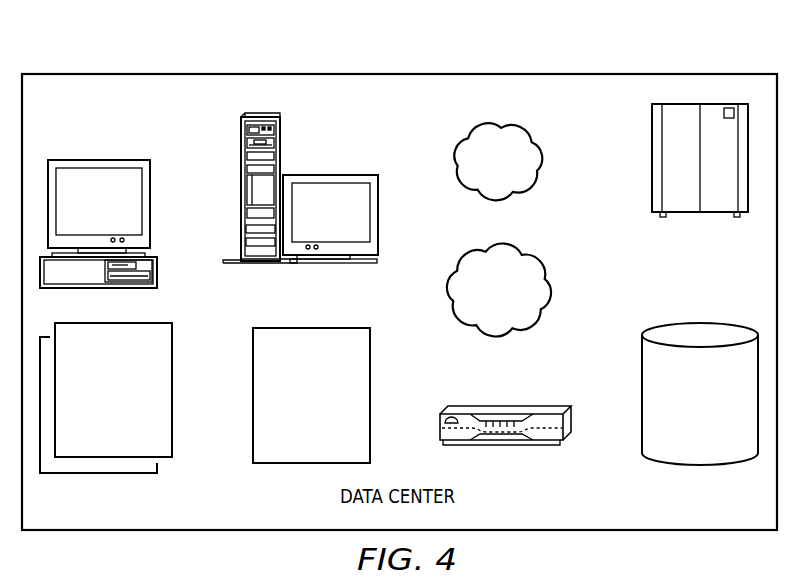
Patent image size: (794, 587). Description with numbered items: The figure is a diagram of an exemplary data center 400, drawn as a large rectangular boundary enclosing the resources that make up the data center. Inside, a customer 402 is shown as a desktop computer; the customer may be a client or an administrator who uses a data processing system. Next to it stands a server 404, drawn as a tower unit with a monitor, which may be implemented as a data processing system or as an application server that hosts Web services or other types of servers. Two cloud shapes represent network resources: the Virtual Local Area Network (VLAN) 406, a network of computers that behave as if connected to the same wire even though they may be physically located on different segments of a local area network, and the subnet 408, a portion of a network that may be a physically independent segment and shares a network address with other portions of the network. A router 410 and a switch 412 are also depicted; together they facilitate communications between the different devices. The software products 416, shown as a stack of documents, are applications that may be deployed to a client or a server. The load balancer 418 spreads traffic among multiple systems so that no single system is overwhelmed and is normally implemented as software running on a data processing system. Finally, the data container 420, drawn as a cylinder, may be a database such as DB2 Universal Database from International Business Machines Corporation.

The data center 400 is at (541, 73).
The customer 402 is at (98, 160).
The server 404 is at (333, 172).
The Virtual Local Area Network (VLAN) 406 is at (547, 150).
The subnet 408 is at (535, 322).
The router 410 is at (535, 446).
The switch 412 is at (718, 214).
The software products 416 is at (130, 433).
The load balancer 418 is at (330, 437).
The data container 420 is at (718, 442).